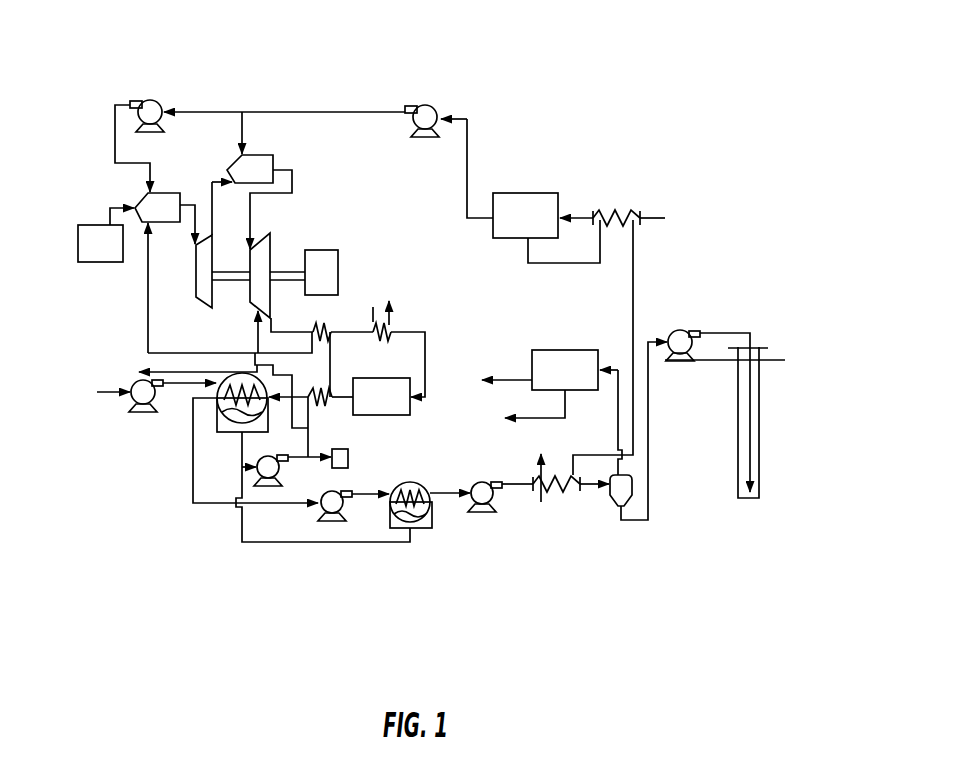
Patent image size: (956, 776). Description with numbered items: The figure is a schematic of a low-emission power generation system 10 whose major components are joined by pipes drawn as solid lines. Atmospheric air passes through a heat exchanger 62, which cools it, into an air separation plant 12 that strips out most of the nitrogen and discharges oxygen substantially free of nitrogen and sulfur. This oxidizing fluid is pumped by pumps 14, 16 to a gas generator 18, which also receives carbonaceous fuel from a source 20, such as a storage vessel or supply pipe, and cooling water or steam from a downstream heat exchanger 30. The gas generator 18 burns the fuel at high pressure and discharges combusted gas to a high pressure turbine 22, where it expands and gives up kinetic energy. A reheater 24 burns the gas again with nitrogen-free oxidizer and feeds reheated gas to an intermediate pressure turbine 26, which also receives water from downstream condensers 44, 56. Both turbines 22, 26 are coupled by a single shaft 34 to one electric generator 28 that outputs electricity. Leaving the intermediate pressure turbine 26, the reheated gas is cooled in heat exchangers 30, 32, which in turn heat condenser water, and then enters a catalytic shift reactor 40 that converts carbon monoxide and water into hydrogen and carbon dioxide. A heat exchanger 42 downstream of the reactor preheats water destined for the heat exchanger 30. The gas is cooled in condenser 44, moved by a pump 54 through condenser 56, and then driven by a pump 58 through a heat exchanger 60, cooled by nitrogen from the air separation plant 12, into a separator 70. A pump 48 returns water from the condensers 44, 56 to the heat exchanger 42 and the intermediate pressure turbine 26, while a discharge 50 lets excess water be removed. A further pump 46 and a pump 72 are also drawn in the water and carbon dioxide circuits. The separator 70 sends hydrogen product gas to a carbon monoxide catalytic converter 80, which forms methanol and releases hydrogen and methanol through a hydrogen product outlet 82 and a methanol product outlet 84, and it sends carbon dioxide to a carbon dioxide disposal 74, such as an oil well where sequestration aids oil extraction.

The low-emission power generation system 10 is at (618, 92).
The air separation plant 12 is at (522, 193).
The pump 14 is at (428, 106).
The pump 16 is at (157, 99).
The gas generator 18 is at (136, 206).
The source 20 is at (77, 238).
The high pressure turbine 22 is at (196, 277).
The reheater 24 is at (258, 155).
The intermediate pressure turbine 26 is at (333, 250).
The electric generator 28 is at (272, 236).
The heat exchanger 30 is at (330, 322).
The heat exchanger 32 is at (392, 318).
The shaft 34 is at (230, 280).
The catalytic shift reactor 40 is at (400, 378).
The heat exchanger 42 is at (333, 404).
The condenser 44 is at (217, 398).
The pump 46 is at (140, 412).
The pump 48 is at (331, 467).
The discharge 50 is at (265, 486).
The pump 54 is at (327, 521).
The condenser 56 is at (423, 528).
The pump 58 is at (488, 512).
The heat exchanger 60 is at (573, 495).
The heat exchanger 62 is at (637, 205).
The separator 70 is at (613, 503).
The pump 72 is at (680, 330).
The carbon dioxide disposal 74 is at (760, 488).
The carbon monoxide catalytic converter 80 is at (590, 350).
The hydrogen product outlet 82 is at (512, 380).
The methanol product outlet 84 is at (528, 420).